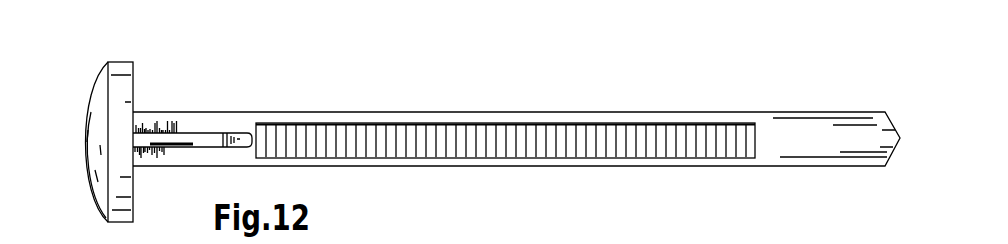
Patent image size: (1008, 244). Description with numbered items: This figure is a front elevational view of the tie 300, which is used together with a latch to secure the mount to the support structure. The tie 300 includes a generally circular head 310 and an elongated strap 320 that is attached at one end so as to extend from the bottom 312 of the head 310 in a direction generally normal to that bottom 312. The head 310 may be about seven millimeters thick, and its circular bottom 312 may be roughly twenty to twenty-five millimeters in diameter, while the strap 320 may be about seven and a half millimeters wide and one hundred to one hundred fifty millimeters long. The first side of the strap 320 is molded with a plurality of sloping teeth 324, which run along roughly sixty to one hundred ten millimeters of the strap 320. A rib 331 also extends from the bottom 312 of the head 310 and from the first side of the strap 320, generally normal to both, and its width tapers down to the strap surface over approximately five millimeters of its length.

The tie 300 is at (655, 99).
The head 310 is at (97, 110).
The bottom of the head 312 is at (152, 87).
The strap 320 is at (813, 137).
The sloping teeth 324 is at (468, 128).
The rib 331 is at (213, 140).